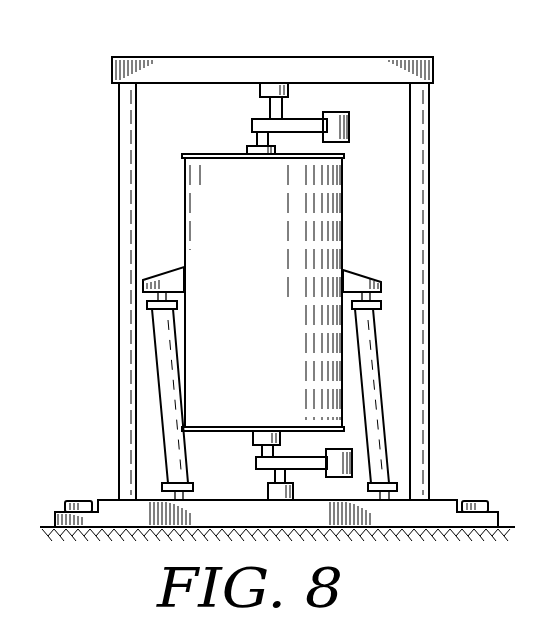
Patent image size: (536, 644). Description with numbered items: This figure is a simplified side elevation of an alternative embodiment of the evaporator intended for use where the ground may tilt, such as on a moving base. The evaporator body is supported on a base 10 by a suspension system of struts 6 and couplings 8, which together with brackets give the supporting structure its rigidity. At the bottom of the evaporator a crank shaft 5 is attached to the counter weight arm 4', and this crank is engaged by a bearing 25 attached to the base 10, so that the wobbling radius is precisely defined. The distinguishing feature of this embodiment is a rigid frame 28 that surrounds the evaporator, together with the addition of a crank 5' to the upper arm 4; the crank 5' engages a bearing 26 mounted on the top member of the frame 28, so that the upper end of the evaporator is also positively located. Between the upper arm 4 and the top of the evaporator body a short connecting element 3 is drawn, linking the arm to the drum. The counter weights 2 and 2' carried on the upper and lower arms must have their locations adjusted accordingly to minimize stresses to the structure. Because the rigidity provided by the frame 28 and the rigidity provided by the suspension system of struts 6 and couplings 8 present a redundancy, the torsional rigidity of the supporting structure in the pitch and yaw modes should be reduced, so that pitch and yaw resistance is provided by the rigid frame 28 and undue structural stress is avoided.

The rigid frame 28 is at (322, 64).
The bearing 26 is at (290, 90).
The crank 5' is at (255, 106).
The counter weight 2 is at (314, 127).
The upper coupling 3 is at (257, 140).
The upper arm 4 is at (280, 149).
The couplings 8 is at (381, 306).
The struts 6 is at (163, 385).
The counter weight arm 4' is at (278, 444).
The counter weight 2' is at (309, 452).
The crank shaft 5 is at (258, 480).
The bearing 25 is at (294, 492).
The base 10 is at (304, 519).